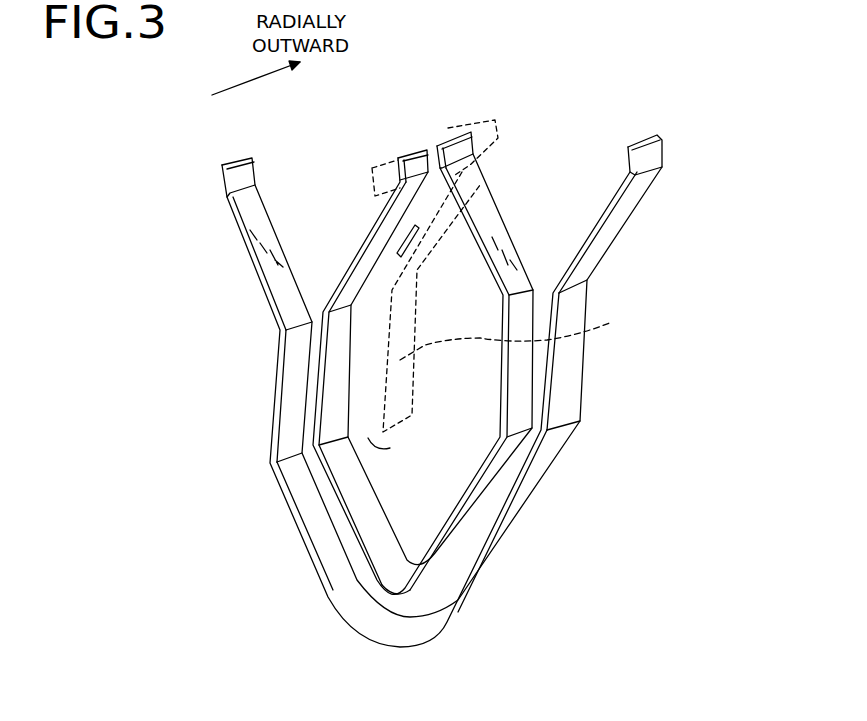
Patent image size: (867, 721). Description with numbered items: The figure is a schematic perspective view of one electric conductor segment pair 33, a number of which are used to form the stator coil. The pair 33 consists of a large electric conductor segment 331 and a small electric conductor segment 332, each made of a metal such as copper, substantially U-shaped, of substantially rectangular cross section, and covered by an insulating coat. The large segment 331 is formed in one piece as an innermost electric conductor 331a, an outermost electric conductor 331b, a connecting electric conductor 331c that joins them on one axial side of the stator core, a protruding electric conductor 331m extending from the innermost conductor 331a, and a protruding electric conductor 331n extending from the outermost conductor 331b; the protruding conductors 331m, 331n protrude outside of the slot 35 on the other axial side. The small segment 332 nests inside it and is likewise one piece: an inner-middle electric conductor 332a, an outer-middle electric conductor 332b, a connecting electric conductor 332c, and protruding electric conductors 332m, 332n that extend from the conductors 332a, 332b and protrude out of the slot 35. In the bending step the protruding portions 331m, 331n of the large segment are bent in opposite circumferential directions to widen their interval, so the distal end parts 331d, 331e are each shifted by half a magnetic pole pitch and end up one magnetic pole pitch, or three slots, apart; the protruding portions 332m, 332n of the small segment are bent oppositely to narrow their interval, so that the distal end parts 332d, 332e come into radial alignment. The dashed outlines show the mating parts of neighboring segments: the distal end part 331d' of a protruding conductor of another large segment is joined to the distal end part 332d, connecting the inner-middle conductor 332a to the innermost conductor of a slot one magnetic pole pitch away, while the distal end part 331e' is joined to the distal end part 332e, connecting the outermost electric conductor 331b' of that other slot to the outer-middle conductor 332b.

The electric conductor segment pair 33 is at (320, 602).
The slot 35 is at (509, 6).
The large electric conductor segment 331 is at (618, 242).
The innermost electric conductor 331a is at (292, 377).
The outermost electric conductor 331b is at (607, 355).
The outermost electric conductor 331b' is at (535, 338).
The connecting electric conductor 331c is at (390, 630).
The distal end part 331d is at (195, 177).
The distal end part 331d' is at (398, 278).
The distal end part 331e is at (689, 155).
The distal end part 331e' is at (494, 123).
The protruding electric conductor 331m is at (285, 290).
The protruding electric conductor 331n is at (618, 218).
The small electric conductor segment 332 is at (517, 243).
The inner-middle electric conductor 332a is at (330, 400).
The outer-middle electric conductor 332b is at (522, 407).
The connecting electric conductor 332c is at (410, 583).
The distal end part 332d is at (399, 158).
The distal end part 332e is at (455, 130).
The protruding electric conductor 332m is at (373, 253).
The protruding electric conductor 332n is at (480, 217).